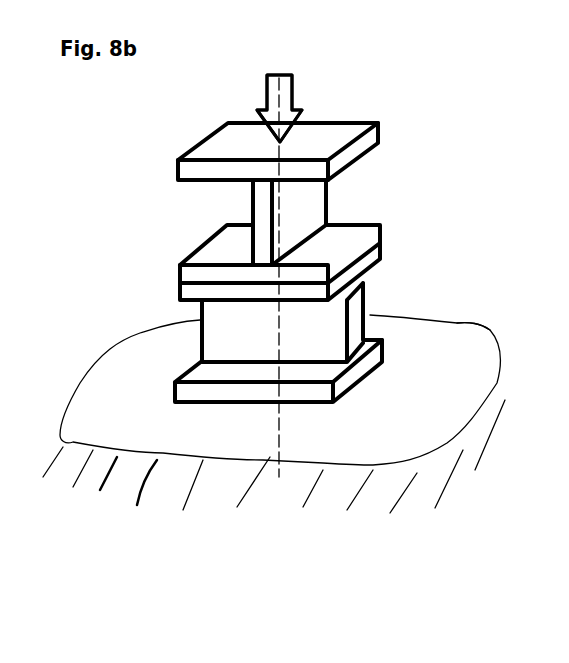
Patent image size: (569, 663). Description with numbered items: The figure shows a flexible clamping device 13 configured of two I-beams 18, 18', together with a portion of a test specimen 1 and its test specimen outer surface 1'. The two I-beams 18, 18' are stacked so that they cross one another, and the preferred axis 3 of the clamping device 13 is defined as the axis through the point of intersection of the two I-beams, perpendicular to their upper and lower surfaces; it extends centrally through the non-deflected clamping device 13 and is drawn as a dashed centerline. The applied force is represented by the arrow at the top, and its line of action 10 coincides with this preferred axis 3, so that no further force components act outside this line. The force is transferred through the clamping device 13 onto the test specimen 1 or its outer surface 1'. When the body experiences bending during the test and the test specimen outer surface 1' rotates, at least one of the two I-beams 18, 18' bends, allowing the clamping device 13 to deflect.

The test specimen 1 is at (274, 410).
The test specimen outer surface 1' is at (505, 344).
The preferred axis 3 is at (276, 70).
The line of action 10 is at (279, 108).
The clamping device 13 is at (126, 241).
The I-beam 18 is at (320, 235).
The I-beam 18' is at (320, 271).